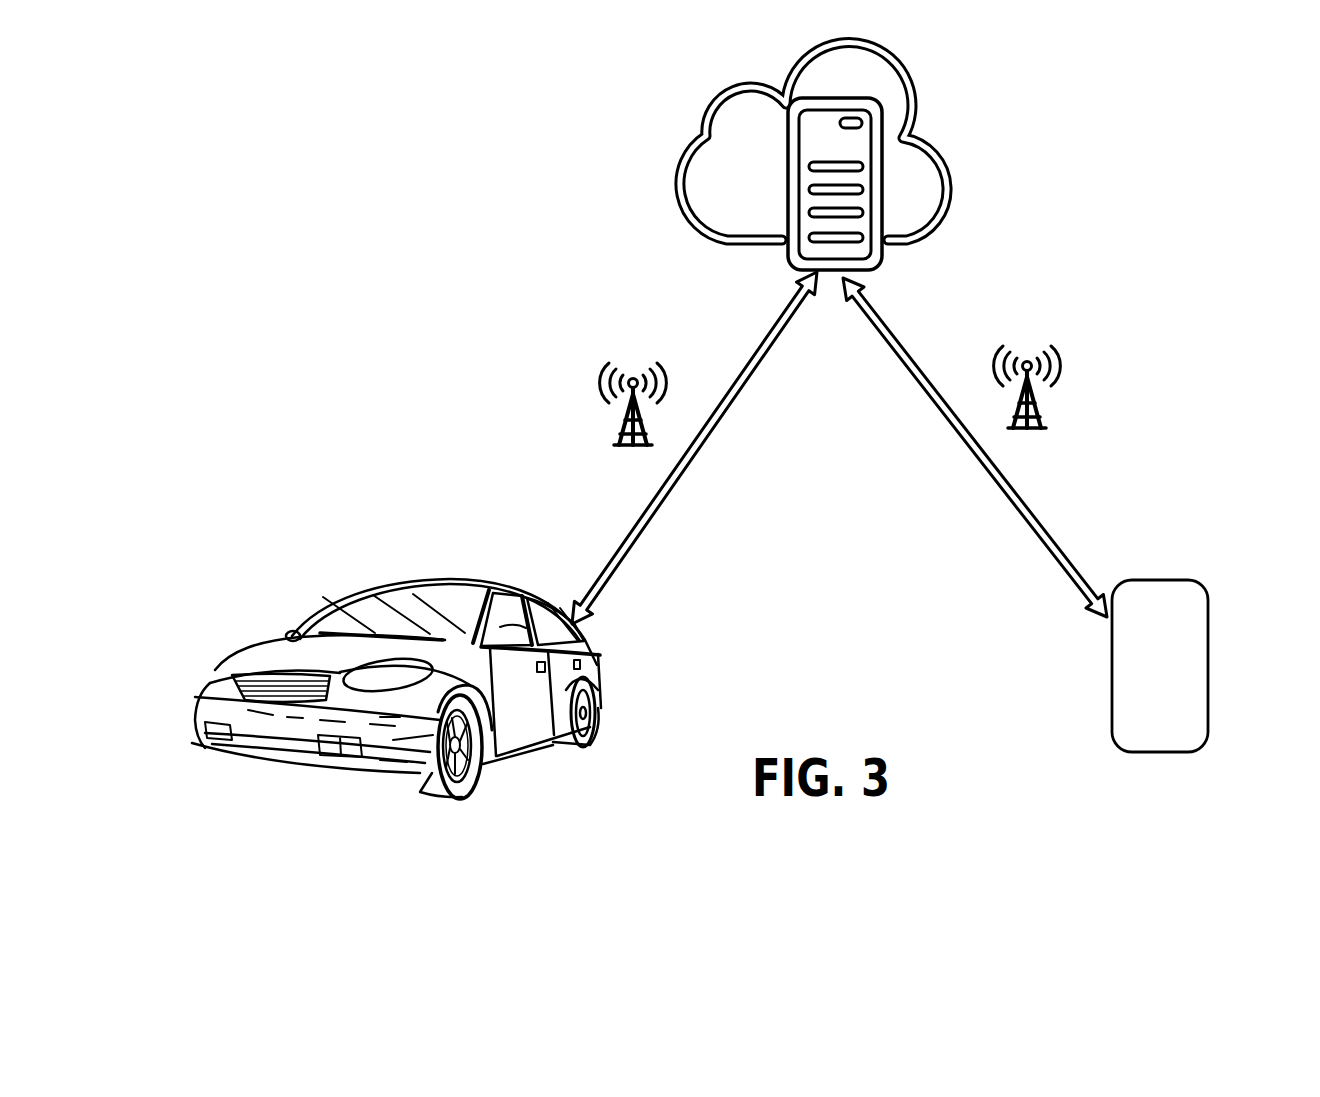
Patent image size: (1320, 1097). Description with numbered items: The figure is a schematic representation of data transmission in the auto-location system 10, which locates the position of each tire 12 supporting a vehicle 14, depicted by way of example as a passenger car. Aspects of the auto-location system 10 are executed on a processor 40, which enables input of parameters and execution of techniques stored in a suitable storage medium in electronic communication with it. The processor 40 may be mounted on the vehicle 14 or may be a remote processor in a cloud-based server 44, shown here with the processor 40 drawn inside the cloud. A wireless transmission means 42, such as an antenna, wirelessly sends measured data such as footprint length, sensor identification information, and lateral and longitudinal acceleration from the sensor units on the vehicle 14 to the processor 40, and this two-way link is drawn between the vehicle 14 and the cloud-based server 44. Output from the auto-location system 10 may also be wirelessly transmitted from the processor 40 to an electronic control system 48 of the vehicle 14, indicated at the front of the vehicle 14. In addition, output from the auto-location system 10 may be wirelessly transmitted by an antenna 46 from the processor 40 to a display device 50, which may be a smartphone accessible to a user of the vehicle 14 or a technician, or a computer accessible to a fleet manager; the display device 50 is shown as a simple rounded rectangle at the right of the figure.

The auto-location system 10 is at (1157, 157).
The tire 12 is at (477, 775).
The vehicle 14 is at (605, 656).
The processor 40 is at (883, 160).
The wireless transmission means 42 is at (648, 509).
The cloud-based server 44 is at (750, 247).
The antenna 46 is at (1013, 490).
The electronic control system 48 is at (248, 717).
The display device 50 is at (1212, 618).